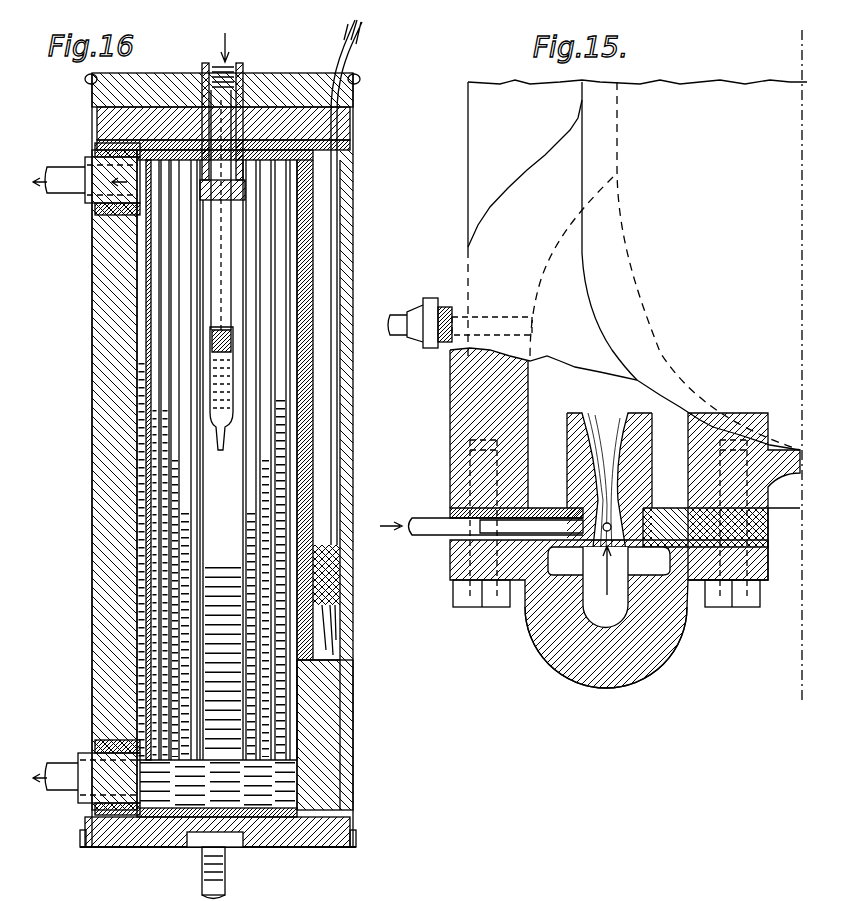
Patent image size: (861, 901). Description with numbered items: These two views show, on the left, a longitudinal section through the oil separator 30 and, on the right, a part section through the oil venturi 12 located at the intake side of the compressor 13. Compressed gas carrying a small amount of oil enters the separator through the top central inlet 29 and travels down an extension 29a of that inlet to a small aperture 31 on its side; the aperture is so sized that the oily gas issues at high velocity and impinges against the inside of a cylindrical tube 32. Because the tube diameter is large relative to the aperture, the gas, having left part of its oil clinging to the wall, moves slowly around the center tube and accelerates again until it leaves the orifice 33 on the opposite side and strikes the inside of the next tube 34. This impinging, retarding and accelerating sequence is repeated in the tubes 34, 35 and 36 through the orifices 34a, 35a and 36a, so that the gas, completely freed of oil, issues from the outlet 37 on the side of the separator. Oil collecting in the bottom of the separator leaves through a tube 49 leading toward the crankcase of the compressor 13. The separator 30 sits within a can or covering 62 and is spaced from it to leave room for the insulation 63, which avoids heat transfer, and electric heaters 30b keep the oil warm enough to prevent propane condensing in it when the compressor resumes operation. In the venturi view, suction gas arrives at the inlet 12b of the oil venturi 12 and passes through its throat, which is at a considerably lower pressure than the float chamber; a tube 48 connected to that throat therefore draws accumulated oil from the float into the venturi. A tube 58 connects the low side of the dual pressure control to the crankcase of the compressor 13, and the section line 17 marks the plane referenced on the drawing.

In FIG. 15, the oil venturi 12 is at (578, 483).
In FIG. 15, the inlet of the oil venturi 12b is at (597, 607).
In FIG. 15, the compressor 13 is at (716, 88).
In FIG. 16, the section line 17 is at (56, 258).
In FIG. 16, the top central inlet 29 is at (232, 64).
In FIG. 16, the extension of the inlet 29a is at (225, 296).
In FIG. 16, the oil separator 30 is at (85, 500).
In FIG. 16, the electric heaters 30b is at (320, 748).
In FIG. 16, the aperture 31 is at (240, 350).
In FIG. 16, the cylindrical tube 32 is at (195, 270).
In FIG. 16, the orifice 33 is at (190, 305).
In FIG. 16, the tube 34 is at (178, 330).
In FIG. 16, the orifice 34a is at (265, 262).
In FIG. 16, the tube 35 is at (180, 352).
In FIG. 16, the orifice 35a is at (170, 235).
In FIG. 16, the tube 36 is at (148, 380).
In FIG. 16, the orifice 36a is at (293, 208).
In FIG. 16, the outlet 37 is at (70, 175).
In FIG. 15, the tube 48 is at (423, 540).
In FIG. 16, the tube 49 is at (62, 765).
In FIG. 15, the tube 58 is at (405, 305).
In FIG. 16, the can or covering 62 is at (92, 558).
In FIG. 16, the insulation 63 is at (96, 604).